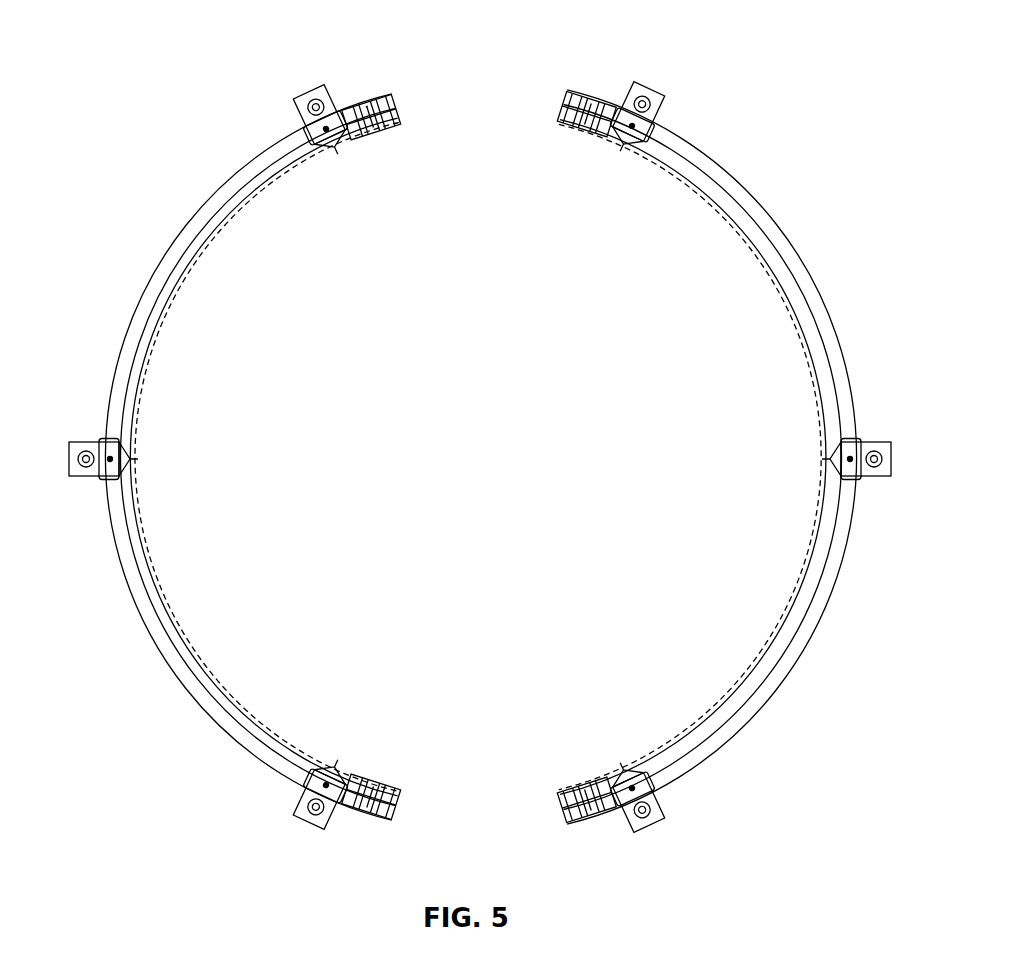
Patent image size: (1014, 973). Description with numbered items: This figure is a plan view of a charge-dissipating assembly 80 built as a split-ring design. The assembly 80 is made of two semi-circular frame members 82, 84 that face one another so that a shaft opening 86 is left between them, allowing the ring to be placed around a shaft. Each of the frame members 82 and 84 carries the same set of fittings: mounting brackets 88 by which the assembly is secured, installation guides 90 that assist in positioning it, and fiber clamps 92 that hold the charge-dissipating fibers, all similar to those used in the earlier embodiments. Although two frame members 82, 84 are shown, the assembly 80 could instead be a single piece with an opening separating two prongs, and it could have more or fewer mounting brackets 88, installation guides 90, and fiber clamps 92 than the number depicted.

The charge-dissipating assembly 80 is at (186, 54).
The semi-circular frame member 82 is at (203, 212).
The semi-circular frame member 84 is at (785, 228).
The shaft opening 86 is at (483, 160).
The mounting bracket 88 is at (77, 440).
The installation guide 90 is at (101, 437).
The fiber clamp 92 is at (392, 118).